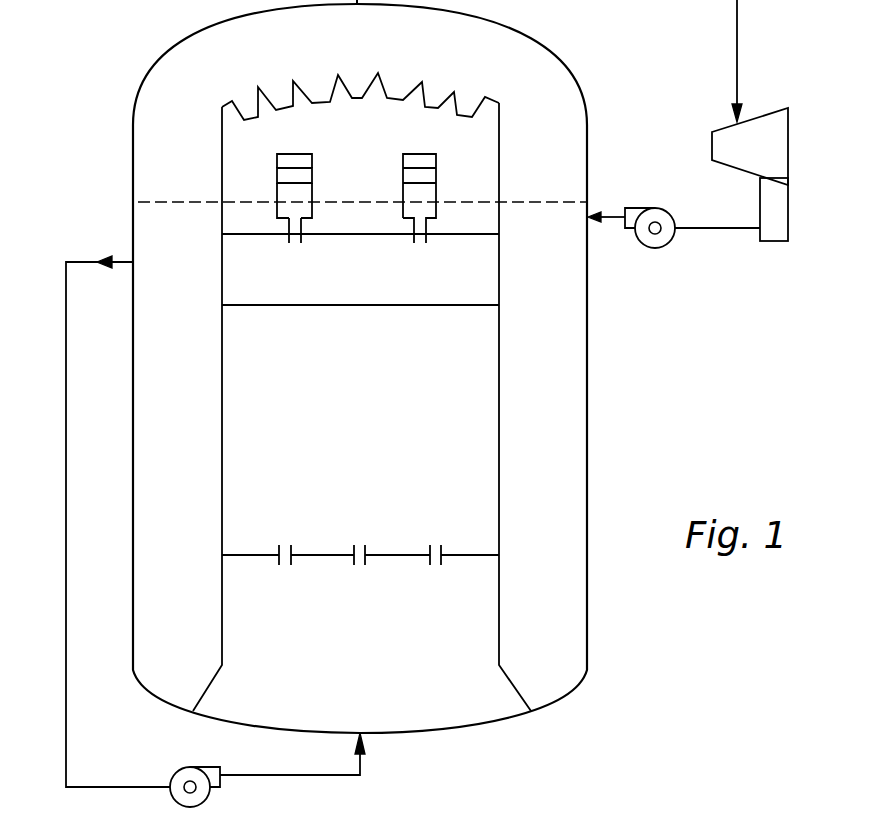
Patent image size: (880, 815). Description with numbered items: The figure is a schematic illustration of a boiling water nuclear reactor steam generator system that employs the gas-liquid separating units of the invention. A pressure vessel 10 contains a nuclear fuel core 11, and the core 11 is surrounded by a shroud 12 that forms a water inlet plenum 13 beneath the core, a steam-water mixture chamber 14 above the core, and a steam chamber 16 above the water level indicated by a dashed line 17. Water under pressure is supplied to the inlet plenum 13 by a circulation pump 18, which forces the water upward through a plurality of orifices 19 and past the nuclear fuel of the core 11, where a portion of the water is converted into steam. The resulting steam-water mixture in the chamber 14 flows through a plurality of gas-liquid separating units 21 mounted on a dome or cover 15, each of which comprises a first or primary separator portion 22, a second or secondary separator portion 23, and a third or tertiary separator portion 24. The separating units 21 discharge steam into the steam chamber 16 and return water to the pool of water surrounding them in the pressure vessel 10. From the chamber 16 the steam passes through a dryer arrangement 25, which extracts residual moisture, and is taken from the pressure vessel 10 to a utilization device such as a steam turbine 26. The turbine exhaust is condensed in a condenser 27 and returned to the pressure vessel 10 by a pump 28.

The pressure vessel 10 is at (133, 129).
The nuclear fuel core 11 is at (372, 421).
The shroud 12 is at (501, 472).
The water inlet plenum 13 is at (378, 645).
The steam-water mixture chamber 14 is at (375, 285).
The dome or cover 15 is at (315, 237).
The steam chamber 16 is at (377, 131).
The water level 17 is at (153, 201).
The circulation pump 18 is at (190, 767).
The orifices 19 is at (435, 568).
The gas-liquid separating units 21 is at (446, 170).
The first or primary separator portion 22 is at (277, 193).
The second or secondary separator portion 23 is at (313, 176).
The third or tertiary separator portion 24 is at (277, 162).
The dryer arrangement 25 is at (390, 73).
The steam turbine 26 is at (788, 127).
The condenser 27 is at (788, 235).
The pump 28 is at (652, 249).